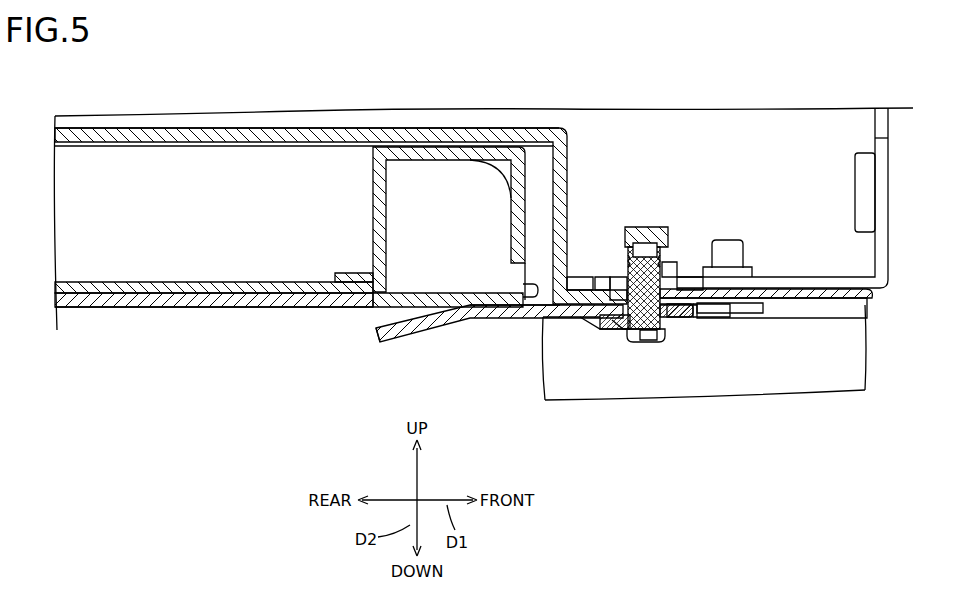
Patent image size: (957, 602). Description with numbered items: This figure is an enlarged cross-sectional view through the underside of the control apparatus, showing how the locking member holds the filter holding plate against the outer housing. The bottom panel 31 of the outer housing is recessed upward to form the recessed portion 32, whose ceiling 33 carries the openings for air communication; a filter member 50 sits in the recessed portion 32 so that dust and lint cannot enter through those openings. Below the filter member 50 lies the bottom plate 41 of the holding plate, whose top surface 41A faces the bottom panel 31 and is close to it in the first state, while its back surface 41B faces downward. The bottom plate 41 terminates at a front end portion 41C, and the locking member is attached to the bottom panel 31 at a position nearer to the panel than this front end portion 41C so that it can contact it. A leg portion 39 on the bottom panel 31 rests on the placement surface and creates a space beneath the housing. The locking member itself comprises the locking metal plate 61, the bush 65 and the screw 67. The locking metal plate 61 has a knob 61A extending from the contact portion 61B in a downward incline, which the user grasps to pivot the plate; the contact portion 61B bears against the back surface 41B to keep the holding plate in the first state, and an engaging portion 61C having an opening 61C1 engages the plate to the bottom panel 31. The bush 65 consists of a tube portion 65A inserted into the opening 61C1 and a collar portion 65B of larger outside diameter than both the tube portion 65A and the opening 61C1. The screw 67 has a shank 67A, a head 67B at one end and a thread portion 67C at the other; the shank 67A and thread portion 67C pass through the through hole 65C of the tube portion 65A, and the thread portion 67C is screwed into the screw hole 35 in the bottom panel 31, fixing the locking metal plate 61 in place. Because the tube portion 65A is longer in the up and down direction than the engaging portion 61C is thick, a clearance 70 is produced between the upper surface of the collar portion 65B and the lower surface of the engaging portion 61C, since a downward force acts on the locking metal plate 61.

The bottom panel 31 is at (870, 295).
The recessed portion 32 is at (567, 197).
The ceiling 33 is at (530, 140).
The screw hole 35 is at (645, 227).
The leg portion 39 is at (865, 353).
The bottom plate 41 is at (292, 308).
The top surface 41A is at (433, 290).
The back surface 41B is at (218, 308).
The front end portion 41C is at (523, 290).
The filter member 50 is at (252, 178).
The locking metal plate 61 is at (462, 318).
The knob 61A is at (375, 333).
The contact portion 61B is at (508, 320).
The engaging portion 61C is at (720, 313).
The opening 61C1 is at (625, 290).
The bush 65 is at (687, 328).
The tube portion 65A is at (680, 330).
The collar portion 65B is at (700, 328).
The through hole 65C is at (670, 277).
The screw 67 is at (628, 343).
The shank 67A is at (645, 342).
The head 67B is at (612, 342).
The thread portion 67C is at (627, 250).
The clearance 70 is at (697, 322).